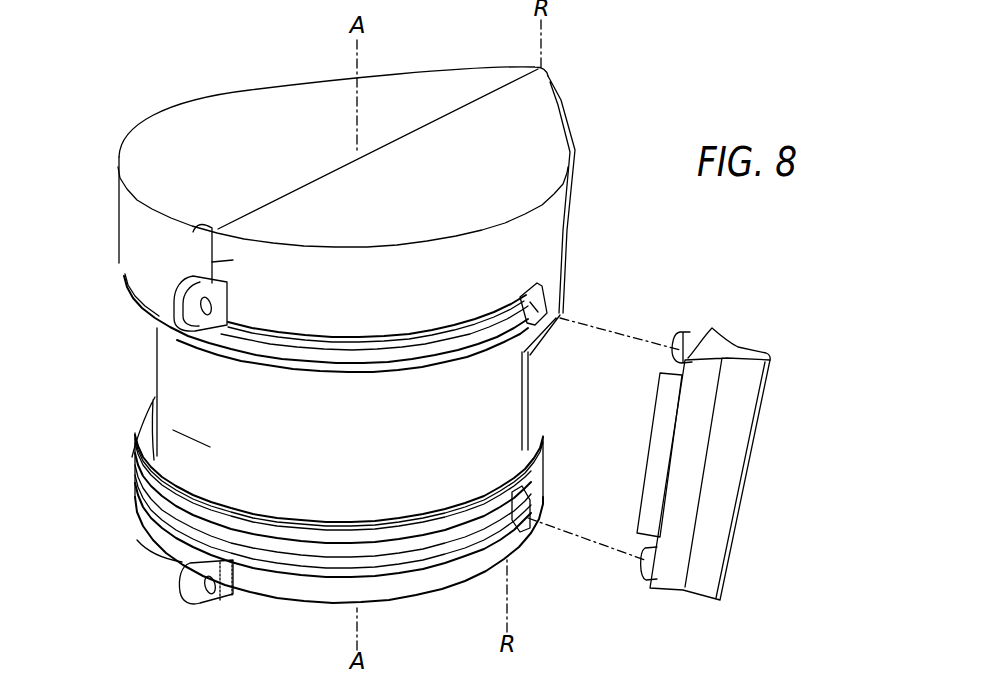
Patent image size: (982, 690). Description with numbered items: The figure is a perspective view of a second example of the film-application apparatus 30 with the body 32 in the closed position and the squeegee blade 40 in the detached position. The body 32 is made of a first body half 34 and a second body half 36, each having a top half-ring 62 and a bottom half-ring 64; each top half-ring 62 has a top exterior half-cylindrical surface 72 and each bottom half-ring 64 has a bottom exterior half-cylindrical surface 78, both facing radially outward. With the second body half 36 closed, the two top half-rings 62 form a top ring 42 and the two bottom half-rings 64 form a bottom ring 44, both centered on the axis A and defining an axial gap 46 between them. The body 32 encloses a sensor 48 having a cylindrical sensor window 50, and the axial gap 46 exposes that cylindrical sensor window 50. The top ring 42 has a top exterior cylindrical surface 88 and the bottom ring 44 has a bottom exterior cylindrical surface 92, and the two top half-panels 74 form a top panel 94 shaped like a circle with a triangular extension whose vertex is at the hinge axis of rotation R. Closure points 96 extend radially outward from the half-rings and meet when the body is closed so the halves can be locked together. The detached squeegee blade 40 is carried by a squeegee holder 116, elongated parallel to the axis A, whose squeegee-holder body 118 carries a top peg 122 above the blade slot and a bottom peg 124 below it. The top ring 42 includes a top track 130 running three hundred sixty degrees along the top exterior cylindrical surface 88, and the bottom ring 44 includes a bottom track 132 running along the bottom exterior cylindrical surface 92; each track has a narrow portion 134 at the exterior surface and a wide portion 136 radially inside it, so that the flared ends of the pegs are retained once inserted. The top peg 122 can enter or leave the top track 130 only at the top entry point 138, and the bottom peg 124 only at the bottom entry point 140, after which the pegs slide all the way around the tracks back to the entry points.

The film-application apparatus 30 is at (118, 82).
The body 32 is at (297, 90).
The first body half 34 is at (222, 100).
The second body half 36 is at (463, 585).
The squeegee blade 40 is at (650, 412).
The top ring 42 is at (118, 208).
The bottom ring 44 is at (150, 545).
The axial gap 46 is at (140, 337).
The sensor 48 is at (137, 458).
The cylindrical sensor window 50 is at (200, 450).
The top half-ring 62 is at (233, 260).
The bottom half-ring 64 is at (283, 518).
The top exterior half-cylindrical surface 72 is at (223, 232).
The top half-panel 74 is at (527, 113).
The bottom exterior half-cylindrical surface 78 is at (148, 500).
The top exterior cylindrical surface 88 is at (377, 273).
The bottom exterior cylindrical surface 92 is at (428, 578).
The top panel 94 is at (535, 163).
The closure points 96 is at (195, 334).
The squeegee holder 116 is at (737, 420).
The squeegee-holder body 118 is at (752, 498).
The top peg 122 is at (688, 334).
The bottom peg 124 is at (647, 578).
The top track 130 is at (298, 338).
The bottom track 132 is at (285, 555).
The narrow portion 134 is at (323, 348).
The wide portion 136 is at (377, 343).
The top entry point 138 is at (541, 295).
The bottom entry point 140 is at (527, 525).